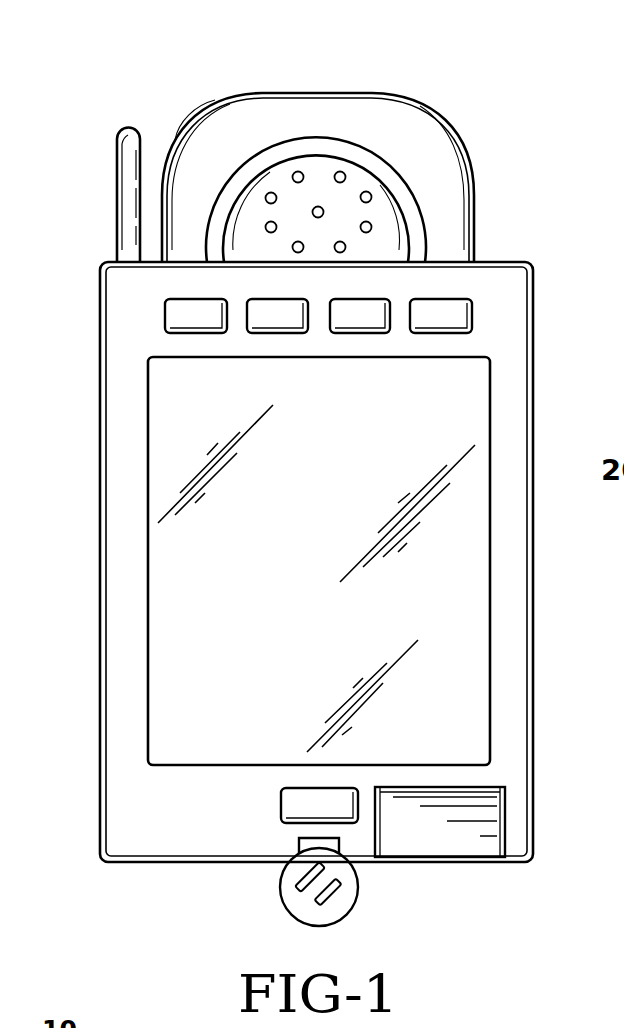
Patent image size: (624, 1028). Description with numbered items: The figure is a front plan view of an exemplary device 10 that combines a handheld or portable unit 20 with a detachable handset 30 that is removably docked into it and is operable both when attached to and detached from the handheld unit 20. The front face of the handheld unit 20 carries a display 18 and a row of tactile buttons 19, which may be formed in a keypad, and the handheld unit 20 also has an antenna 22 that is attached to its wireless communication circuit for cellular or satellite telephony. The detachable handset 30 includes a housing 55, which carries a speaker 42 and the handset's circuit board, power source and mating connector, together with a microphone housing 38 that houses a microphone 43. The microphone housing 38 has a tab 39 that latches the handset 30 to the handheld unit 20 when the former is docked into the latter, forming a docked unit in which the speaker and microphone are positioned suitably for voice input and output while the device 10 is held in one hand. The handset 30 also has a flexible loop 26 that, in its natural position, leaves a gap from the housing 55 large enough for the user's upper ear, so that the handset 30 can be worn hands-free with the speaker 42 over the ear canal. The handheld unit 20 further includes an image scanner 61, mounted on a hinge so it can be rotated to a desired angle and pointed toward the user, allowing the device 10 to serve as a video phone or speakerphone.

The device 10 is at (78, 112).
The display 18 is at (165, 588).
The tactile buttons 19 is at (200, 316).
The handheld unit 20 is at (542, 366).
The antenna 22 is at (127, 190).
The flexible loop 26 is at (410, 192).
The detachable handset 30 is at (458, 117).
The microphone housing 38 is at (302, 912).
The tab 39 is at (296, 842).
The speaker 42 is at (301, 174).
The microphone 43 is at (322, 898).
The housing 55 is at (200, 130).
The image scanner 61 is at (440, 825).